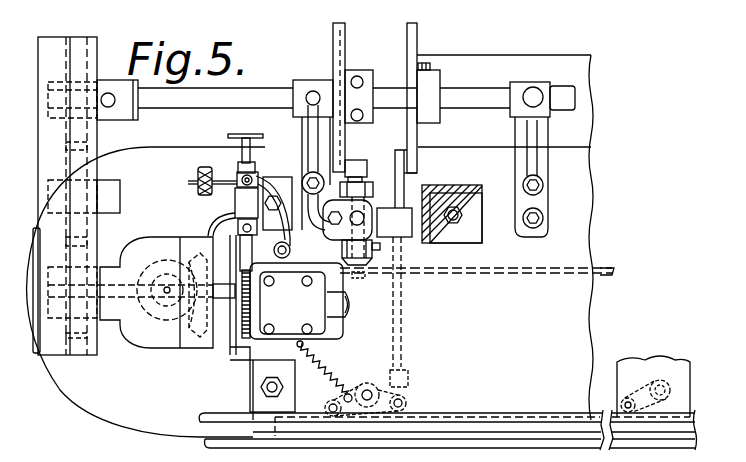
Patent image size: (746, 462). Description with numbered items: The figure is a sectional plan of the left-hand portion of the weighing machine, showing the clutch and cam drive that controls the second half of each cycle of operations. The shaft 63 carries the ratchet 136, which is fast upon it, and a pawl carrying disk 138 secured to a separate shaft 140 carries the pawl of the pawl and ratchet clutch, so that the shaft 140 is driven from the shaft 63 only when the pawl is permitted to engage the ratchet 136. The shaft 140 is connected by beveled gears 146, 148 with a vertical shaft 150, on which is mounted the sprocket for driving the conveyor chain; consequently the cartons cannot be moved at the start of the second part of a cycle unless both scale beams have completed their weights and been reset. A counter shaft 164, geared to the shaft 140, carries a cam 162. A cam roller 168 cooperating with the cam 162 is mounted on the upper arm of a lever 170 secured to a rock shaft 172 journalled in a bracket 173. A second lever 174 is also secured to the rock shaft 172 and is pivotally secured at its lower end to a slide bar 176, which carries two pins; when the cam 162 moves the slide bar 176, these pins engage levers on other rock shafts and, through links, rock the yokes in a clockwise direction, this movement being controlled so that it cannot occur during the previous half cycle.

The shaft 63 is at (341, 312).
The ratchet 136 is at (250, 310).
The pawl carrying disk 138 is at (250, 398).
The shaft 140 is at (133, 317).
The beveled gear 146 is at (192, 350).
The beveled gear 148 is at (163, 350).
The vertical shaft 150 is at (176, 240).
The cam 162 is at (344, 30).
The counter shaft 164 is at (218, 108).
The cam roller 168 is at (398, 144).
The lever 170 is at (374, 192).
The rock shaft 172 is at (257, 247).
The bracket 173 is at (382, 230).
The lever 174 is at (368, 262).
The slide bar 176 is at (488, 275).